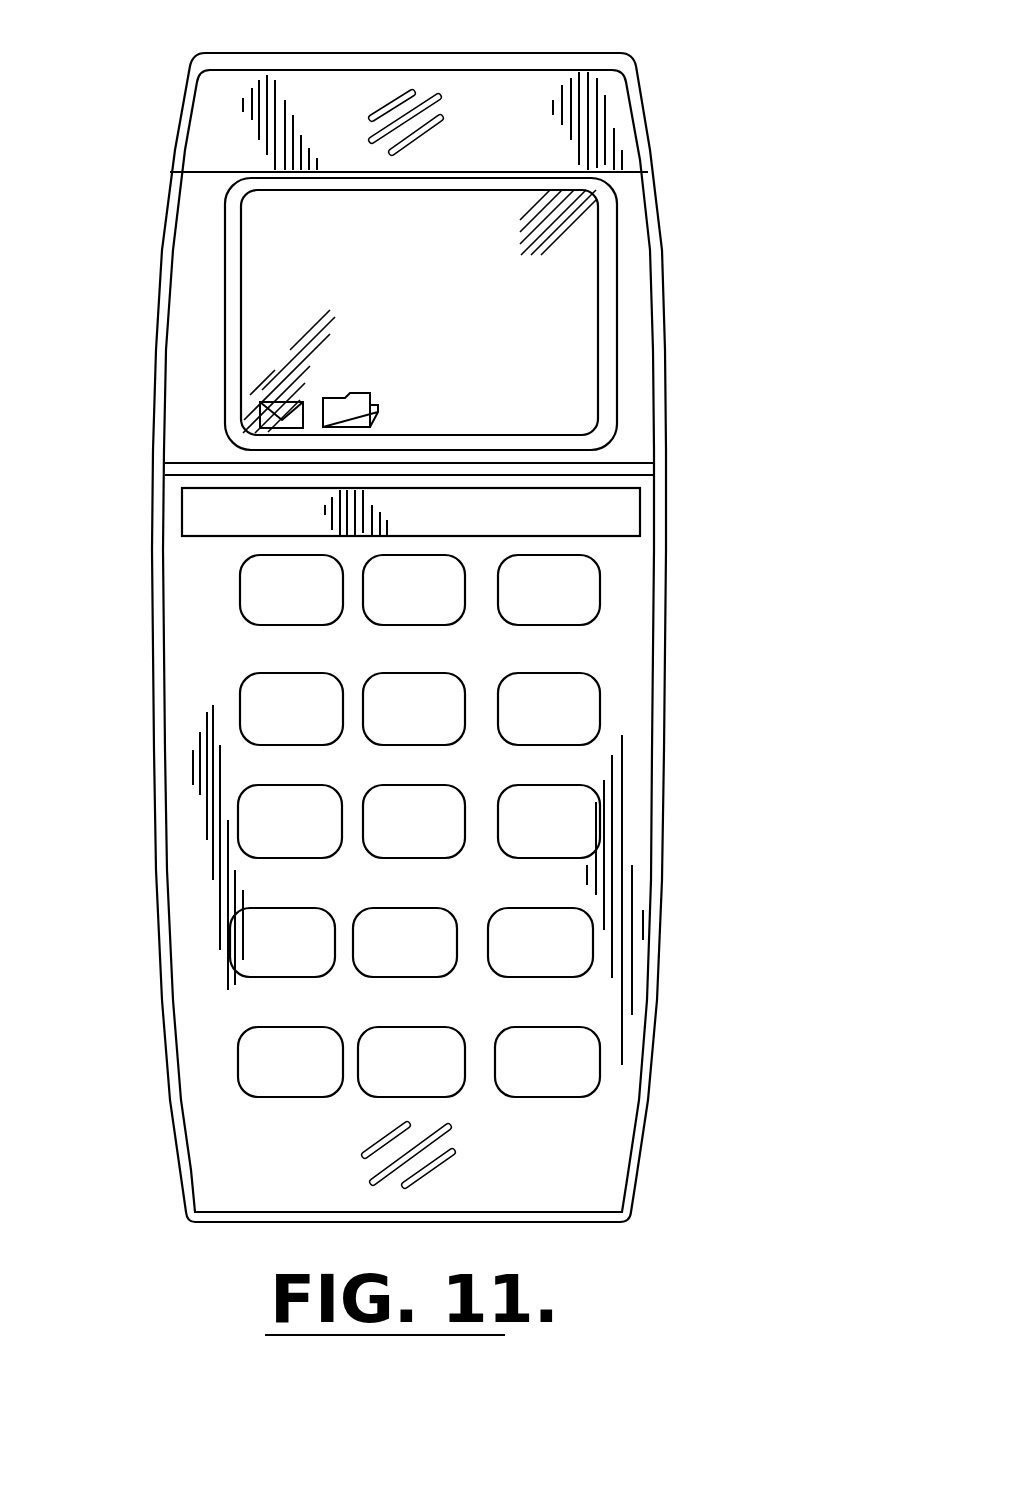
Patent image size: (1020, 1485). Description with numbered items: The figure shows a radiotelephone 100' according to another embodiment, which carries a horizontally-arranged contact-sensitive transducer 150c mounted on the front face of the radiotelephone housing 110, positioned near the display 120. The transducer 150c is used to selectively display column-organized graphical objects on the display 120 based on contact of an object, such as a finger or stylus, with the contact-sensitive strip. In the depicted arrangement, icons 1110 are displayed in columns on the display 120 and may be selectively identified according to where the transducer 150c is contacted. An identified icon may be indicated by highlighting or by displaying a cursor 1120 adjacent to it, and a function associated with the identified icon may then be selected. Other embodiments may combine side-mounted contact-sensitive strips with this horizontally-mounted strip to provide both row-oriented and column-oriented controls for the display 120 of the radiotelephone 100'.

The radiotelephone 100' is at (475, 611).
The radiotelephone housing 110 is at (515, 60).
The display 120 is at (590, 200).
The contact-sensitive transducer 150c is at (632, 513).
The icons 1110 is at (262, 421).
The cursor 1120 is at (283, 385).